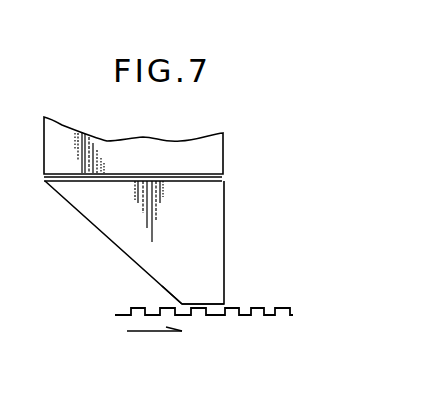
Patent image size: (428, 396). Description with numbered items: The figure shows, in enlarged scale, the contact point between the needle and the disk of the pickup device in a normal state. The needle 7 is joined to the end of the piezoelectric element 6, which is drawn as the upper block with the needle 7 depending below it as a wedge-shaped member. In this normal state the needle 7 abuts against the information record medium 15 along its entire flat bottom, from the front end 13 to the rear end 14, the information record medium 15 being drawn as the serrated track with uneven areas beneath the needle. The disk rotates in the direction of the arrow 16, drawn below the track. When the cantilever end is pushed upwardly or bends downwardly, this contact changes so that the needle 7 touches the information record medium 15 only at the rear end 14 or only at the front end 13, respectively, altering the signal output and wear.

The piezoelectric element 6 is at (223, 153).
The needle 7 is at (224, 230).
The front end 13 is at (225, 303).
The rear end 14 is at (181, 303).
The information record medium 15 is at (293, 315).
The arrow 16 is at (133, 333).